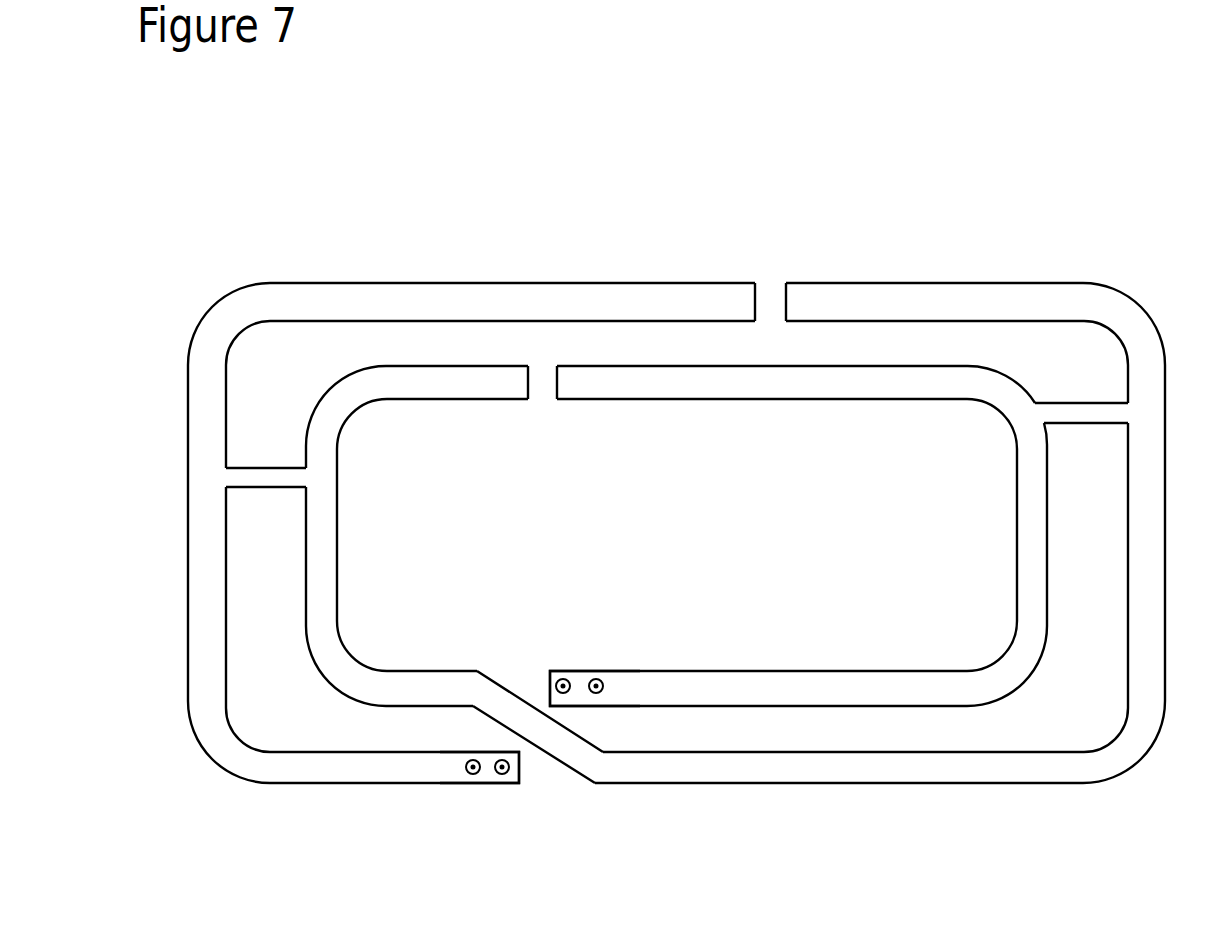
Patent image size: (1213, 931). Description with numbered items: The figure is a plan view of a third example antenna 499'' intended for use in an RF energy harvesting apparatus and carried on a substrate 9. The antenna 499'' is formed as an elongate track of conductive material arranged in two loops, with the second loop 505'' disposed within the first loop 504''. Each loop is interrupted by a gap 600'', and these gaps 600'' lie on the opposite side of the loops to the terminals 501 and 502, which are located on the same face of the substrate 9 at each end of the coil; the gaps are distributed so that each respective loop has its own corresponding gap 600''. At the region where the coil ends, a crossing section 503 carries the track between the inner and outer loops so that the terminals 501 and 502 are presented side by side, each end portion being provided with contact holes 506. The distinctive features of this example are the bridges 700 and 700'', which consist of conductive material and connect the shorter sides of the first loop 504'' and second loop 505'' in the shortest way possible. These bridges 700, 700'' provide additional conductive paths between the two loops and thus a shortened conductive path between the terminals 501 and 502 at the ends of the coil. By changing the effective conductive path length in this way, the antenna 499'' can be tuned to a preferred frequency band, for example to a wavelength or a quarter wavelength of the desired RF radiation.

The third example antenna 499'' is at (676, 509).
The first loop 504'' is at (676, 589).
The second loop 505'' is at (676, 623).
The gaps 600'' is at (622, 285).
The bridge 700'' is at (259, 351).
The bridges 700 is at (1060, 319).
The terminal 501 is at (490, 773).
The terminal 502 is at (578, 688).
The crossing section of conductor 503 is at (530, 723).
The contact holes 506 is at (502, 758).
The substrate 9 is at (686, 544).